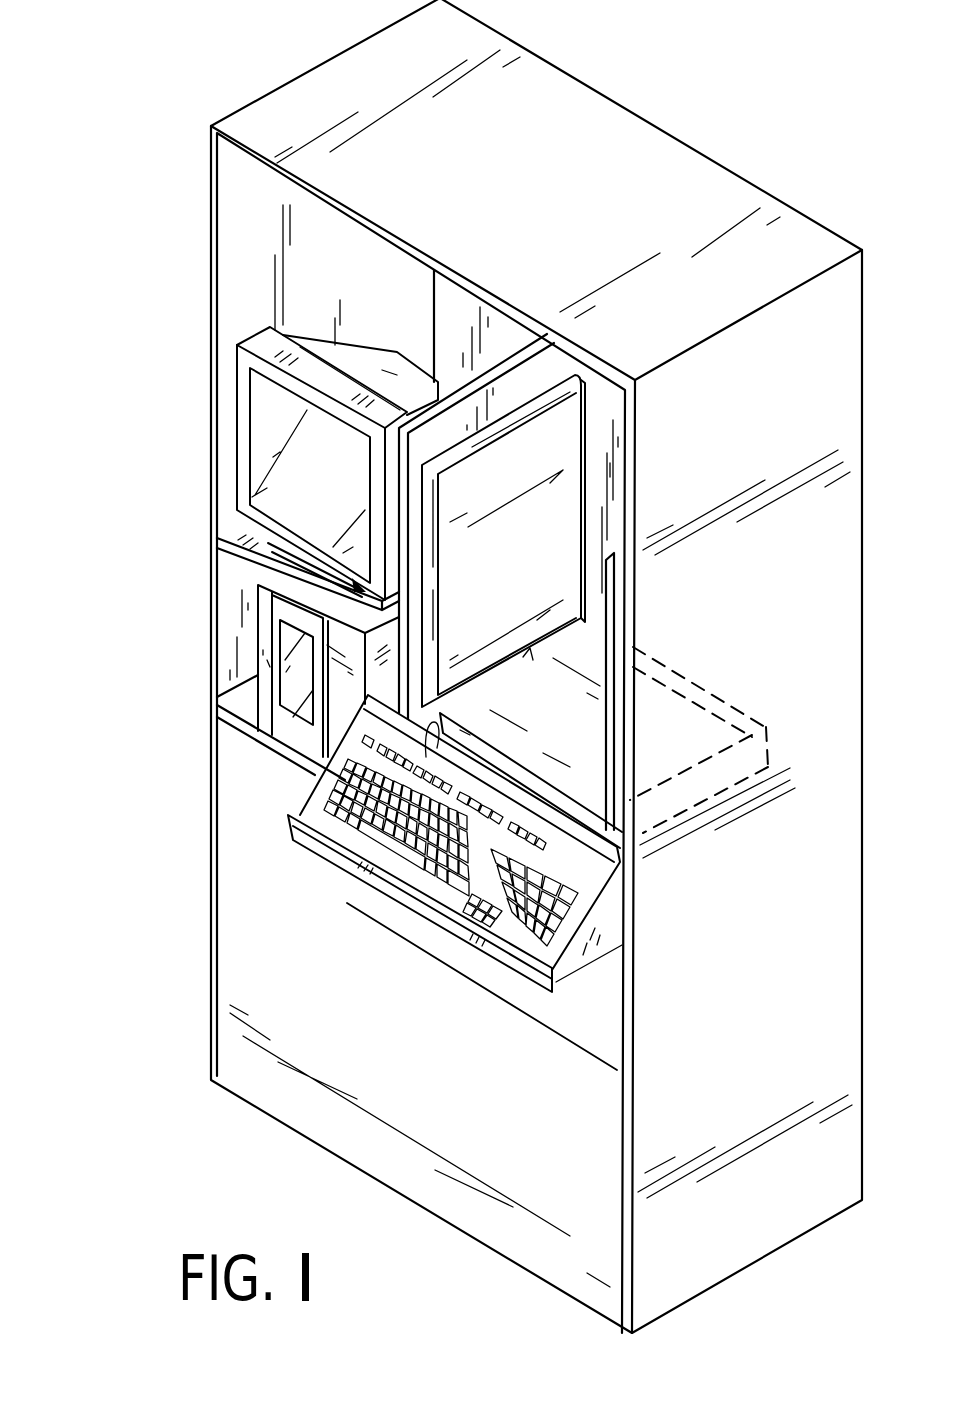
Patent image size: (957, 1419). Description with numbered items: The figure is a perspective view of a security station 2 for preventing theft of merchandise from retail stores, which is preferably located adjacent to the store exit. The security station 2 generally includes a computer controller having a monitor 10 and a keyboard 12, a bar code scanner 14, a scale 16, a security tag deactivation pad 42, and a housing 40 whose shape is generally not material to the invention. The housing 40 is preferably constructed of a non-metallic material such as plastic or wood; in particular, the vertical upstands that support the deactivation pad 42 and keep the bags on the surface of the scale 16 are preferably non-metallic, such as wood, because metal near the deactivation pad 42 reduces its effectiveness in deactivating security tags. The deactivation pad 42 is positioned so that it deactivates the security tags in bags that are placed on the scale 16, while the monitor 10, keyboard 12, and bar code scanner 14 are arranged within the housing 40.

The security apparatus 2 is at (452, 666).
The housing 40 is at (712, 140).
The monitor 10 is at (325, 477).
The bar code scanner 14 is at (290, 694).
The security tag deactivation pad 42 is at (518, 573).
The scale 16 is at (552, 718).
The keyboard 12 is at (346, 874).